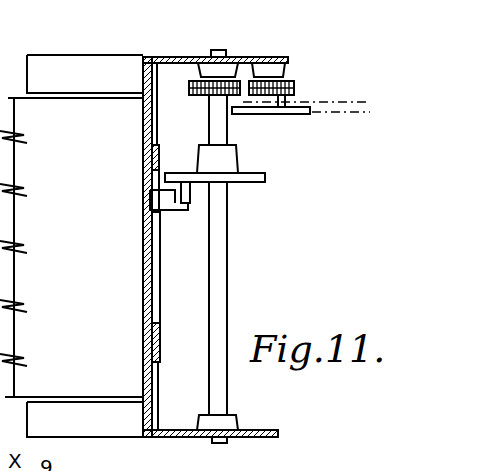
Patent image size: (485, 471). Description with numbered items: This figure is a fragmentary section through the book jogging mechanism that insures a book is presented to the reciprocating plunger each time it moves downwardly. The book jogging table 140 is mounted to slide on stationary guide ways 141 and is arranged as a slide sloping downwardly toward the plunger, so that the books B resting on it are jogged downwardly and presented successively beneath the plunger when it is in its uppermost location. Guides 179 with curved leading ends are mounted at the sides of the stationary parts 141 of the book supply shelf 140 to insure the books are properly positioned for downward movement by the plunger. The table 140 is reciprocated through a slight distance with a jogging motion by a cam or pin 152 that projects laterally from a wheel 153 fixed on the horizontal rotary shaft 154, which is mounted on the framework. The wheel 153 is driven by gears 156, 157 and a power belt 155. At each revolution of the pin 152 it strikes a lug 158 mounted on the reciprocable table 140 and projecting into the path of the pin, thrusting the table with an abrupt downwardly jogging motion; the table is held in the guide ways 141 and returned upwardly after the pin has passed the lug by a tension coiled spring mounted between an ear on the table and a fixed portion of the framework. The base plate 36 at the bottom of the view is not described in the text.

The guides 179 is at (72, 70).
The book jogging table 140 is at (143, 296).
The stationary guide ways 141 is at (143, 373).
The base plate 36 is at (265, 438).
The horizontal rotary shaft 154 is at (224, 275).
The wheel 153 is at (257, 181).
The cam or pin 152 is at (200, 185).
The lug 158 is at (166, 203).
The gear 156 is at (190, 87).
The gear 157 is at (295, 83).
The power belt 155 is at (318, 105).
The books B is at (20, 298).